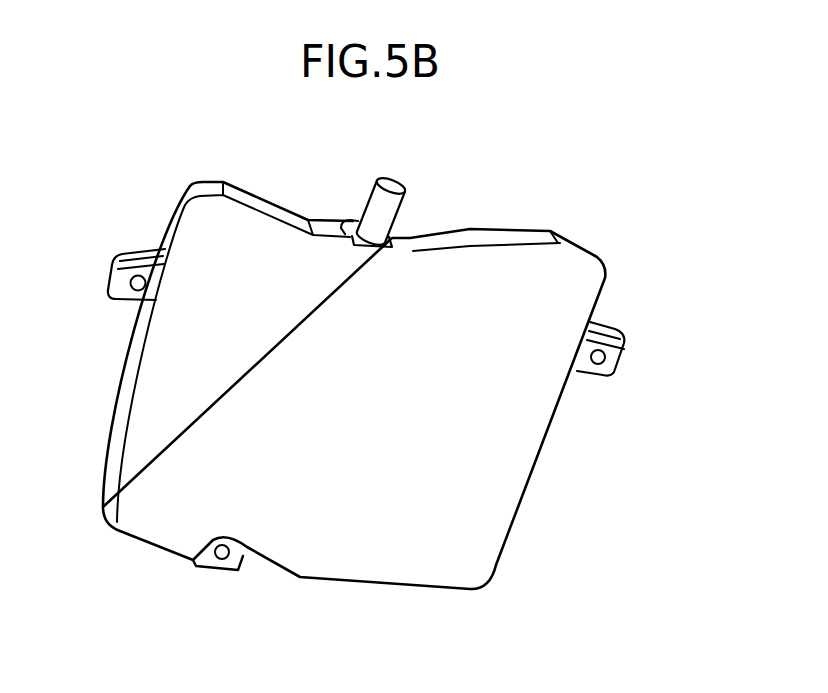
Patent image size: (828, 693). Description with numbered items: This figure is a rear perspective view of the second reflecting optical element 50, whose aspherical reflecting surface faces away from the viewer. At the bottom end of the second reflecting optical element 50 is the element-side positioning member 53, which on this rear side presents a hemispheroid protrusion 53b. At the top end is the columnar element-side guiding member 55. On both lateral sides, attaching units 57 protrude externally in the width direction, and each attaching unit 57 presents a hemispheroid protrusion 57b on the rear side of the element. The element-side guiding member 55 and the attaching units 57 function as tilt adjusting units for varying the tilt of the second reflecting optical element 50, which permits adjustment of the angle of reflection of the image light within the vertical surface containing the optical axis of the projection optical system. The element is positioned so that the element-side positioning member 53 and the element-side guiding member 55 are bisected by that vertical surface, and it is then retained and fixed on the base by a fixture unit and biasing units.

The second reflecting optical element 50 is at (548, 147).
The element-side positioning member 53 is at (246, 562).
The hemispheroid protrusion 53b is at (218, 560).
The element-side guiding member 55 is at (396, 186).
The attaching unit 57 is at (116, 243).
The hemispheroid protrusion 57b is at (130, 281).